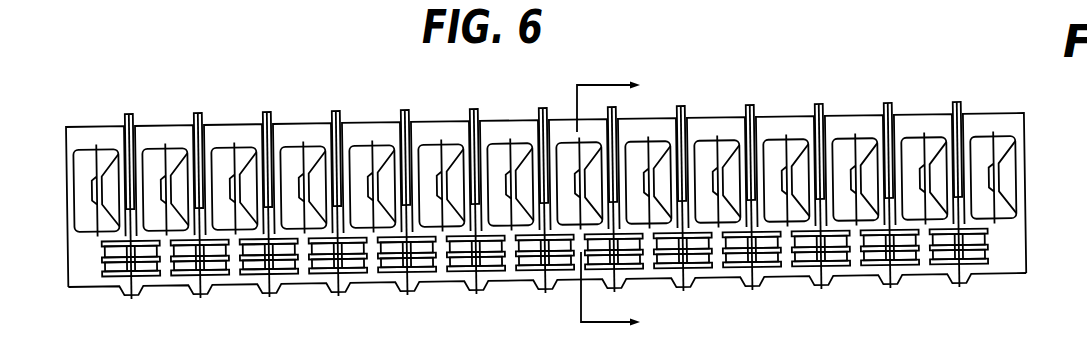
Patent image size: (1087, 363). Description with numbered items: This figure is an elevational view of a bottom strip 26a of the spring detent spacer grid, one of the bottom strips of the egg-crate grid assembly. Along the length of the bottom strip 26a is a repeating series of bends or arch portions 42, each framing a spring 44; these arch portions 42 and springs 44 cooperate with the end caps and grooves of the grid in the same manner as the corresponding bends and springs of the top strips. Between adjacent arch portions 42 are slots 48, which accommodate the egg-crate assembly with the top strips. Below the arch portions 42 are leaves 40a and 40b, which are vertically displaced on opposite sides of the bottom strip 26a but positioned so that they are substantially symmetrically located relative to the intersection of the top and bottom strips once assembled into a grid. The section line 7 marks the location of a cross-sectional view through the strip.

The bottom strip 26a is at (243, 103).
The arch portion 42 is at (850, 117).
The slot 48 is at (342, 139).
The spring 44 is at (1003, 170).
The leaf 40a is at (983, 242).
The leaf 40b is at (1086, 253).
The section line 7- 7 is at (623, 196).